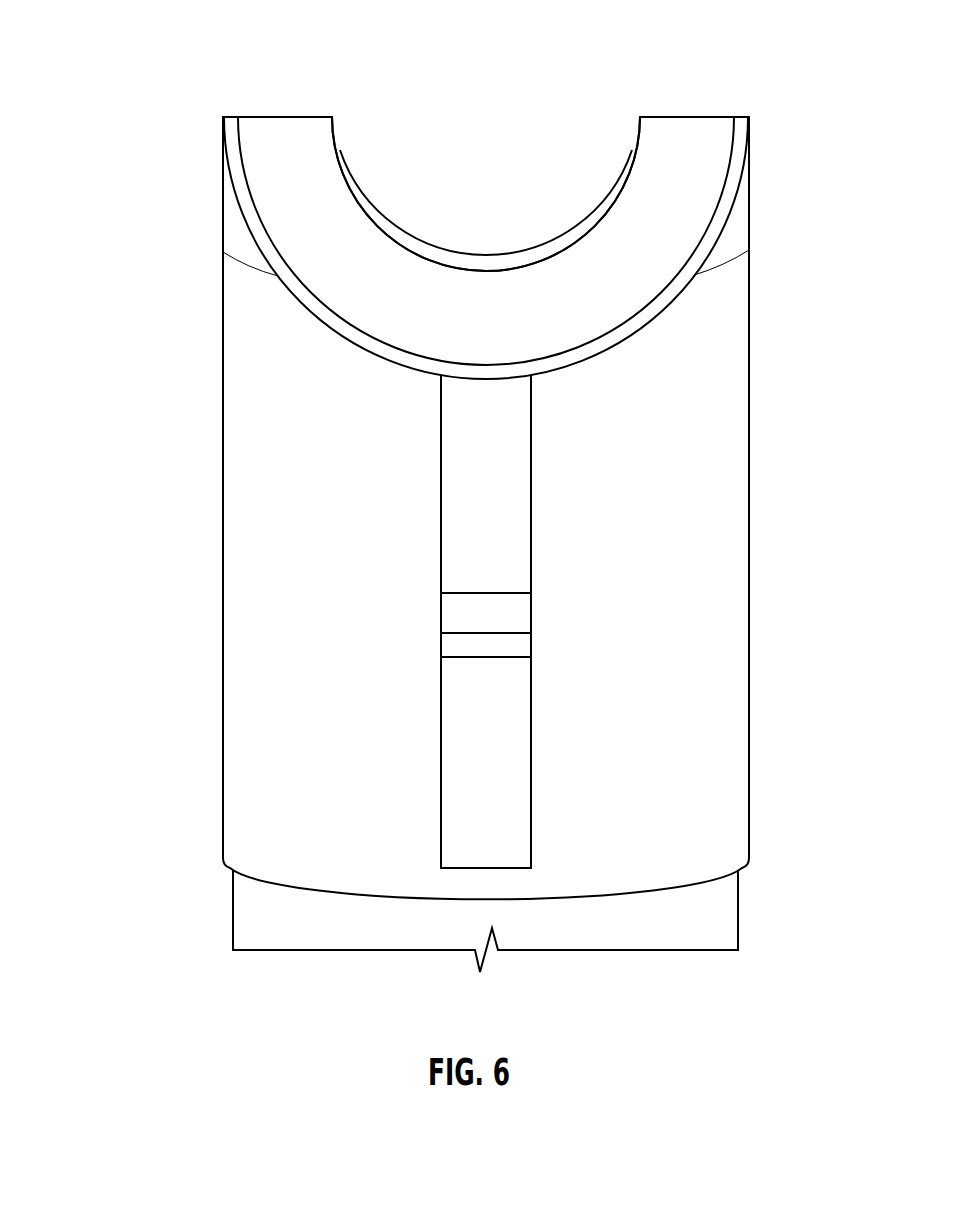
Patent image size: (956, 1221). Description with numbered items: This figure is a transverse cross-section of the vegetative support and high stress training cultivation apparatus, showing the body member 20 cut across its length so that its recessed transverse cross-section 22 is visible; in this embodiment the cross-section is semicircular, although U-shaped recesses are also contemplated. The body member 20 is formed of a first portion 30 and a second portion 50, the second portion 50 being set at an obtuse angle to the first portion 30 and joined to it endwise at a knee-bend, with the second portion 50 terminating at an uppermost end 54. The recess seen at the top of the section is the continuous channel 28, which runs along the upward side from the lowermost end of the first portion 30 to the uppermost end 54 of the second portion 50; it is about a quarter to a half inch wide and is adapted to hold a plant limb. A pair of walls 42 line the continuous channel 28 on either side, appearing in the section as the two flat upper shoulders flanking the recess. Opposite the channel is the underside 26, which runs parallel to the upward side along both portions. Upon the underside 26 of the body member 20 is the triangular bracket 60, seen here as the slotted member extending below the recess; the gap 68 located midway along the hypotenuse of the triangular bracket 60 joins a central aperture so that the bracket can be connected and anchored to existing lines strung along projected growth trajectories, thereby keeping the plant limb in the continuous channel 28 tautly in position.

The body member 20 is at (155, 223).
The recessed transverse cross-section 22 is at (364, 90).
The underside 26 is at (283, 632).
The continuous channel 28 is at (472, 266).
The first portion 30 is at (219, 551).
The walls 42 is at (278, 117).
The second portion 50 is at (680, 97).
The uppermost end 54 is at (648, 310).
The triangular bracket 60 is at (485, 550).
The gap 68 is at (480, 613).